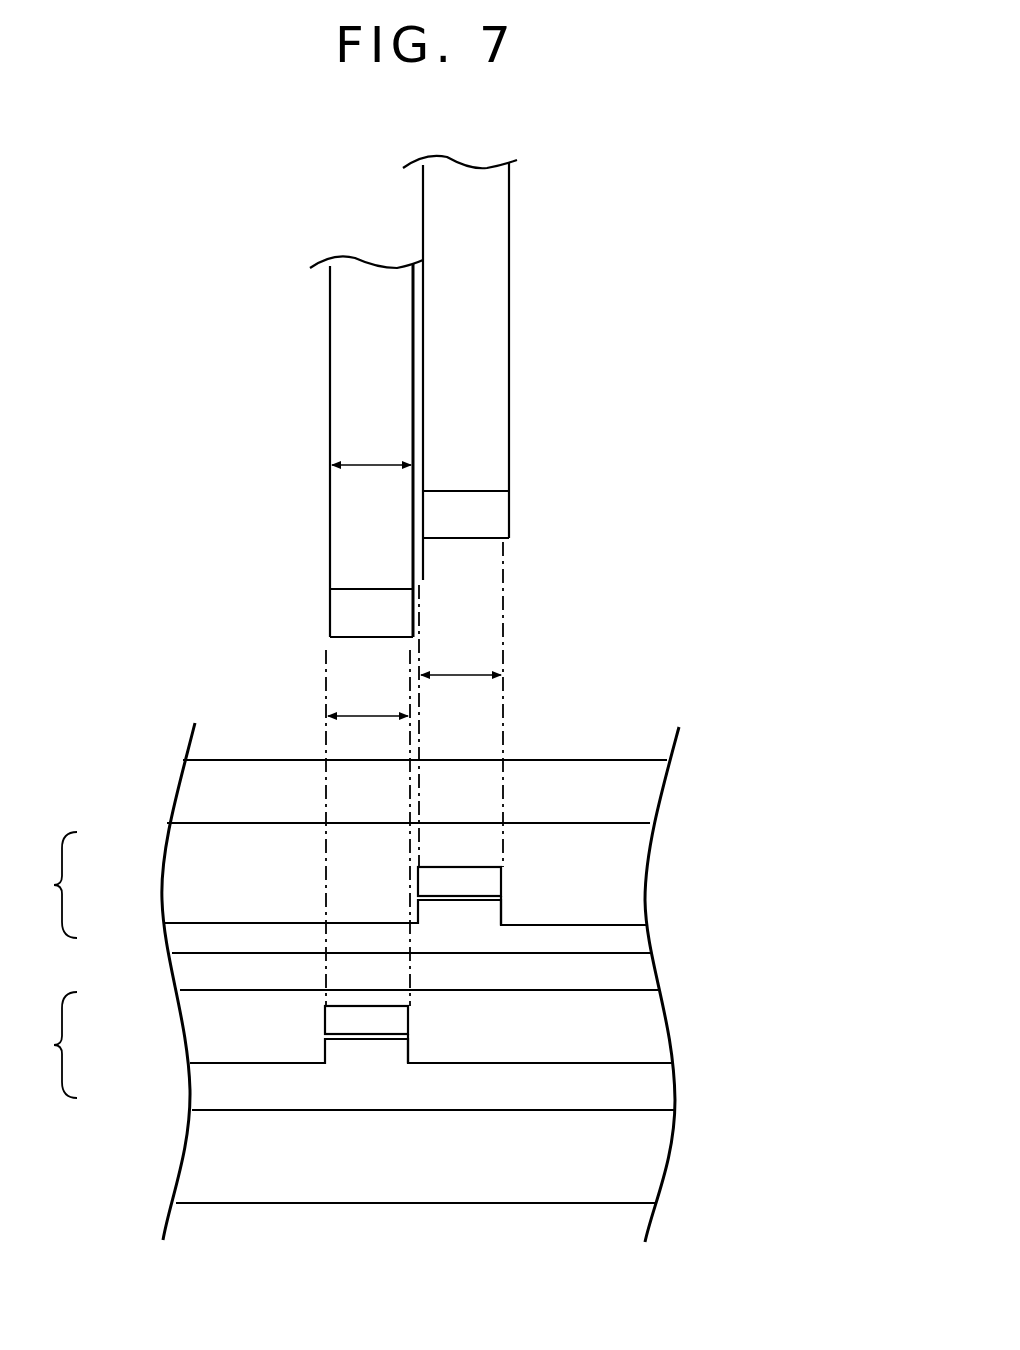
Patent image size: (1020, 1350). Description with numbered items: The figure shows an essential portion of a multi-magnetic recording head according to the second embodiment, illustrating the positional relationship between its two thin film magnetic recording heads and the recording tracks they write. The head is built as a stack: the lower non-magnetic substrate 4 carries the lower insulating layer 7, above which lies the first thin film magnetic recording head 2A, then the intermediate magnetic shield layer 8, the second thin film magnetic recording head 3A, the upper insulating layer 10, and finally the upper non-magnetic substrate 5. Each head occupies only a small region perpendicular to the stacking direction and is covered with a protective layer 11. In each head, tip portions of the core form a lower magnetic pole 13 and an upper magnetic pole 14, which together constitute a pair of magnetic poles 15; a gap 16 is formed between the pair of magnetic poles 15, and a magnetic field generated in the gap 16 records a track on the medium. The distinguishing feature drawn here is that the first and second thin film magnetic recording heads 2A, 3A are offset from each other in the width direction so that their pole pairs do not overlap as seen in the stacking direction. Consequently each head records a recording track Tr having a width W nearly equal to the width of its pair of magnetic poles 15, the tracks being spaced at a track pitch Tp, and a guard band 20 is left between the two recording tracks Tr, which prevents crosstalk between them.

The first thin film magnetic recording head 2A is at (378, 1052).
The second thin film magnetic recording head 3A is at (462, 880).
The lower non-magnetic substrate 4 is at (582, 1222).
The upper non-magnetic substrate 5 is at (532, 750).
The lower insulating layer 7 is at (628, 1150).
The intermediate magnetic shield layer 8 is at (628, 975).
The upper insulating layer 10 is at (622, 795).
The protective layer 11 is at (615, 855).
The lower magnetic pole 13 is at (432, 912).
The upper magnetic pole 14 is at (700, 750).
The pair of magnetic poles 15 is at (47, 965).
The gap 16 is at (500, 893).
The guard band 20 is at (419, 410).
The recording track Tr is at (355, 370).
The track pitch Tp is at (371, 450).
The width W is at (414, 774).